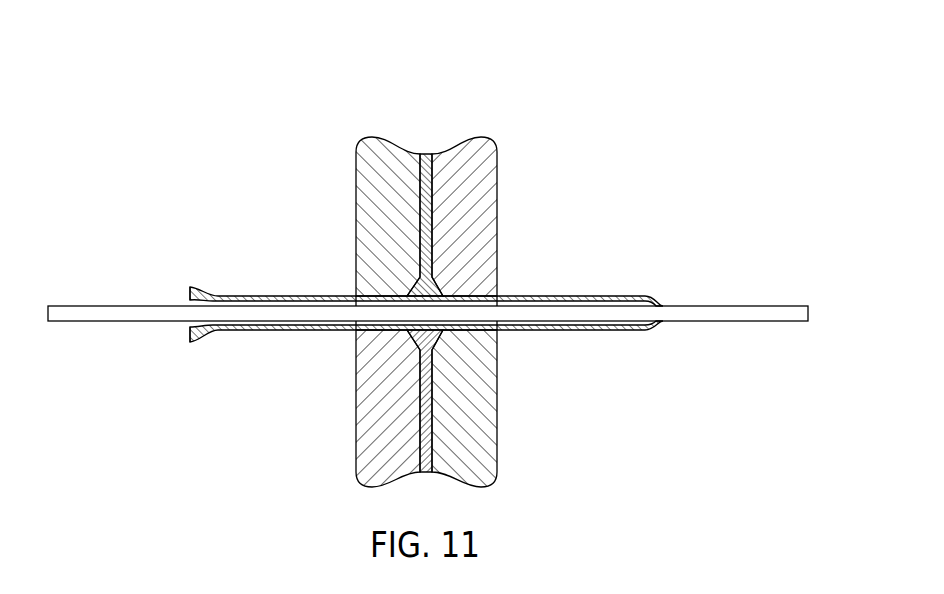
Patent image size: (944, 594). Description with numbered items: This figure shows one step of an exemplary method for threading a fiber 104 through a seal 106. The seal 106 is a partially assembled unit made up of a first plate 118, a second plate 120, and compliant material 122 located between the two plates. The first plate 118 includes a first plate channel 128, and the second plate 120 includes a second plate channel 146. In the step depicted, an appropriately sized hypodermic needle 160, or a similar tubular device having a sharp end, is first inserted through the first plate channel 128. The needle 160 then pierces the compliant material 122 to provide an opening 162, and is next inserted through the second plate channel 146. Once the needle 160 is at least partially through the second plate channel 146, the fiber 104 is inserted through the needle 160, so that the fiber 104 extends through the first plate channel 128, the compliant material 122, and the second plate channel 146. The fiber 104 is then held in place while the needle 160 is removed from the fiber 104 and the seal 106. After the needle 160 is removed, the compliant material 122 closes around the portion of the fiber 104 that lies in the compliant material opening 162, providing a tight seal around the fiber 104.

The fiber 104 is at (138, 311).
The seal 106 is at (428, 259).
The first plate 118 is at (356, 178).
The second plate 120 is at (497, 178).
The compliant material 122 is at (440, 286).
The first plate channel 128 is at (360, 339).
The second plate channel 146 is at (492, 339).
The hypodermic needle 160 is at (272, 297).
The opening 162 is at (413, 340).